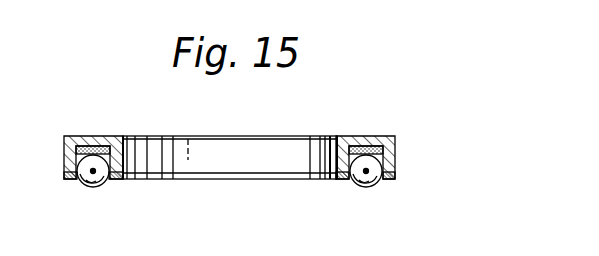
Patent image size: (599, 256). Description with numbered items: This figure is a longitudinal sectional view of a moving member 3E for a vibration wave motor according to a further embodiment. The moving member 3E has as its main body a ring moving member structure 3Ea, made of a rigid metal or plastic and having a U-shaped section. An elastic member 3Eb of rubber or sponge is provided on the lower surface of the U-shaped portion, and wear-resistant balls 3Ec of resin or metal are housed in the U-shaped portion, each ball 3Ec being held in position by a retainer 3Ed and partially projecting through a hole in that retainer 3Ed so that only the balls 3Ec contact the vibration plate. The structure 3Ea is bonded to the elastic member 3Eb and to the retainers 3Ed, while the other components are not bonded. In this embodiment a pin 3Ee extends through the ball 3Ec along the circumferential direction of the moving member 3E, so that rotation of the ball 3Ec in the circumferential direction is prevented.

The moving member 3E is at (416, 173).
The ring moving member structure 3Ea is at (395, 142).
The elastic member 3Eb is at (394, 154).
The wear-resistant ball 3Ec is at (382, 169).
The retainer 3Ed is at (371, 176).
The pin 3Ee is at (368, 184).